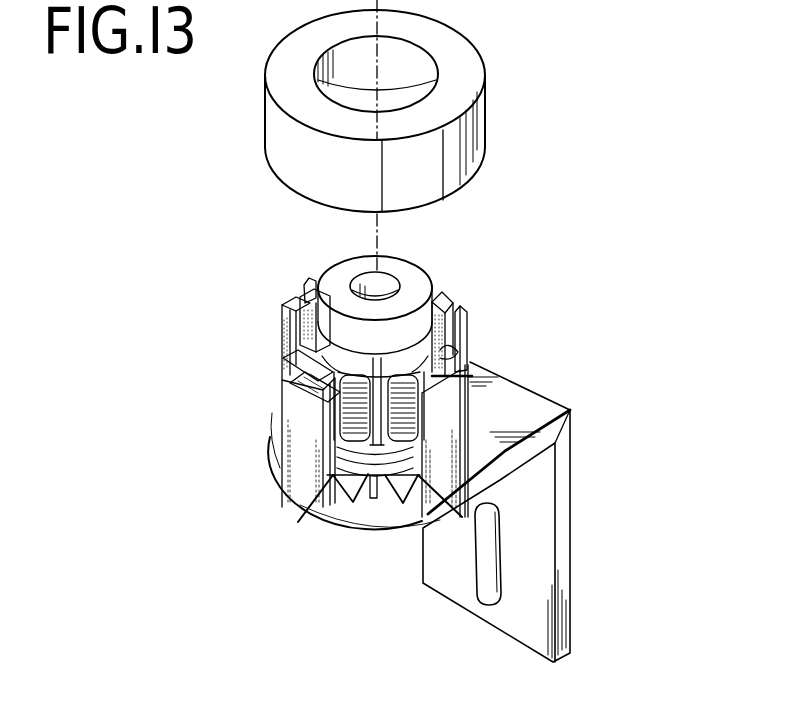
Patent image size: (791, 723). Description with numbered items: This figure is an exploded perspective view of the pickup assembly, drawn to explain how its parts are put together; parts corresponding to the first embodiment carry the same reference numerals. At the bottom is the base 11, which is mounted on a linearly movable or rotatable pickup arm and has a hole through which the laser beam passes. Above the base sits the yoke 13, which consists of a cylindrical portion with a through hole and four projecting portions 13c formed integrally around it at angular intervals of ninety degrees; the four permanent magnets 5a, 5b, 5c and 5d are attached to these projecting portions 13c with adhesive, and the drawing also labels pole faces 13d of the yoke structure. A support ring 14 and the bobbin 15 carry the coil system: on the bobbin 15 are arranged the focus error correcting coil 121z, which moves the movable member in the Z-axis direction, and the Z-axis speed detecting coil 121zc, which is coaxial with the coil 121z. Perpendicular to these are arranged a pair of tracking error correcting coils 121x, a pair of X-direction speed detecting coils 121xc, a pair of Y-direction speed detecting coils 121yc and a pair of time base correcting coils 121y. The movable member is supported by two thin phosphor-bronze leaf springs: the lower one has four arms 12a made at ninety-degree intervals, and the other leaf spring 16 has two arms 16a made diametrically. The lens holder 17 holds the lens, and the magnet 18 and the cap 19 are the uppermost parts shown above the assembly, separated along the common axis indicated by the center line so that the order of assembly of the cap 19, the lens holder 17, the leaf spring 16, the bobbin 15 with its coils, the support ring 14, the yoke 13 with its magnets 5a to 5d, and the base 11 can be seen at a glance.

The cap 19 is at (478, 114).
The magnet 18 is at (390, 268).
The lens holder 17 is at (366, 282).
The leaf spring 16 is at (311, 282).
The arms 16a is at (463, 337).
The yoke 13 is at (280, 382).
The projecting portions 13c is at (283, 338).
The pole piece 13d is at (304, 296).
The permanent magnet 5a is at (450, 292).
The permanent magnet 5b is at (283, 306).
The permanent magnet 5c is at (322, 357).
The permanent magnet 5d is at (426, 358).
The bobbin 15 is at (340, 416).
The support ring 14 is at (383, 498).
The arms 12a is at (386, 532).
The base 11 is at (453, 588).
The tracking error correcting coils 121x is at (303, 503).
The X-direction speed detecting coils 121xc is at (353, 503).
The time base correcting coils 121y is at (290, 388).
The Y-direction speed detecting coils 121yc is at (501, 409).
The focus error correcting coil 121z is at (448, 409).
The Z-axis speed detecting coil 121zc is at (436, 508).